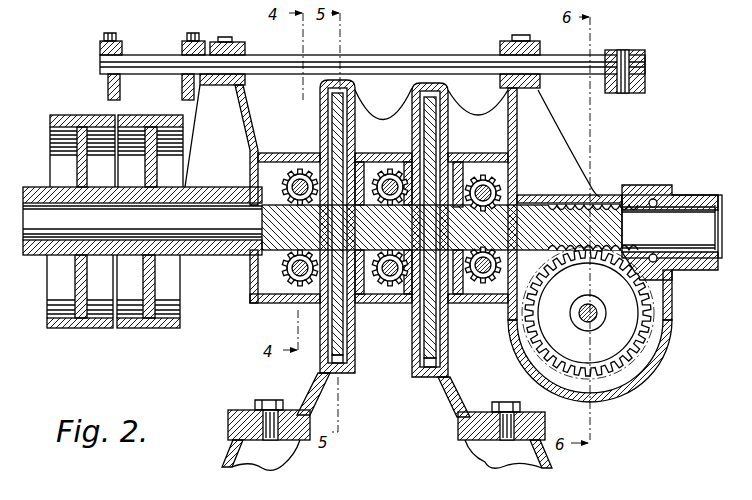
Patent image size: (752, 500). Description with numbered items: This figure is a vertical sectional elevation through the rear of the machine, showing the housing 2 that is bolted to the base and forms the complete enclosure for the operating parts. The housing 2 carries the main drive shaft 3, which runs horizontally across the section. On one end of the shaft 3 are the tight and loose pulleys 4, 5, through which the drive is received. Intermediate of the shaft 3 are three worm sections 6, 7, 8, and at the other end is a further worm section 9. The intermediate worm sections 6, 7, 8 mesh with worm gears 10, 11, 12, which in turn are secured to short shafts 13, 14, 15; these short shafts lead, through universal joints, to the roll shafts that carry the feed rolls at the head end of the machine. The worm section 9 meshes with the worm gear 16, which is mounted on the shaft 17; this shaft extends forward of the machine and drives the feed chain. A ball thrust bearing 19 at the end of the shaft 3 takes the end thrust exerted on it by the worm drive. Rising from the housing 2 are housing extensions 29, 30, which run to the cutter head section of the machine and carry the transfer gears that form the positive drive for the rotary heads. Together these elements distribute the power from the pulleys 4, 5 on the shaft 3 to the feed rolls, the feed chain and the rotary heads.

The housing 2 is at (428, 275).
The main drive shaft 3 is at (492, 206).
The tight pulley 4 is at (135, 327).
The loose pulley 5 is at (92, 326).
The worm section 6 is at (256, 206).
The worm section 7 is at (358, 176).
The worm section 8 is at (452, 196).
The worm section 9 is at (601, 214).
The worm gear 10 is at (280, 226).
The worm gear 11 is at (405, 160).
The worm gear 12 is at (479, 224).
The short shaft 13 is at (296, 180).
The short shaft 14 is at (389, 172).
The short shaft 15 is at (476, 180).
The worm gear 16 is at (588, 313).
The shaft 17 is at (582, 319).
The ball thrust bearing 19 is at (660, 200).
The housing extension 29 is at (344, 375).
The housing extension 30 is at (420, 378).